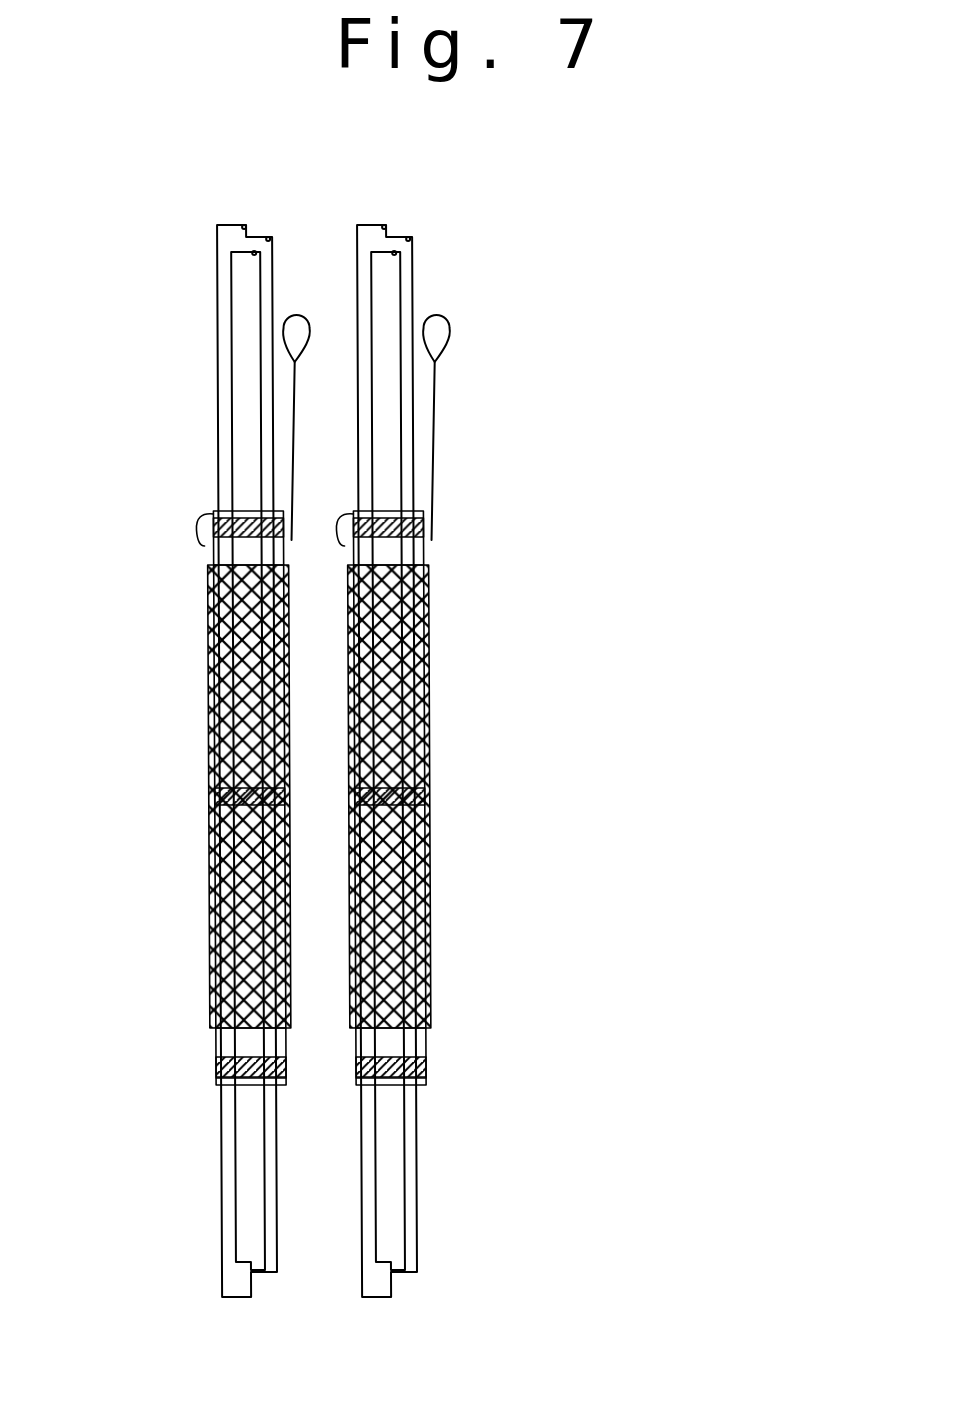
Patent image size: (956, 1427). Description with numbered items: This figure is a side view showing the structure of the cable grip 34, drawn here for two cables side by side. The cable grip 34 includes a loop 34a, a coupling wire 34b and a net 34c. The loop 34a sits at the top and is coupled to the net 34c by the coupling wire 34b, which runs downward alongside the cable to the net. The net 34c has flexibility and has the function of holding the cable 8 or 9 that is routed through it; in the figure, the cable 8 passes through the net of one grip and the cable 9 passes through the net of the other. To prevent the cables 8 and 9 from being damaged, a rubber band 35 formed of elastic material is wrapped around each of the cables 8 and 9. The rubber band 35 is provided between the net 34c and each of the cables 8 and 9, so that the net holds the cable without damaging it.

The cable 8 is at (252, 1193).
The cable 9 is at (394, 1193).
The cable grip 34 is at (489, 637).
The loop 34a is at (297, 319).
The coupling wire 34b is at (292, 423).
The net 34c is at (211, 724).
The rubber band 35 is at (413, 1043).